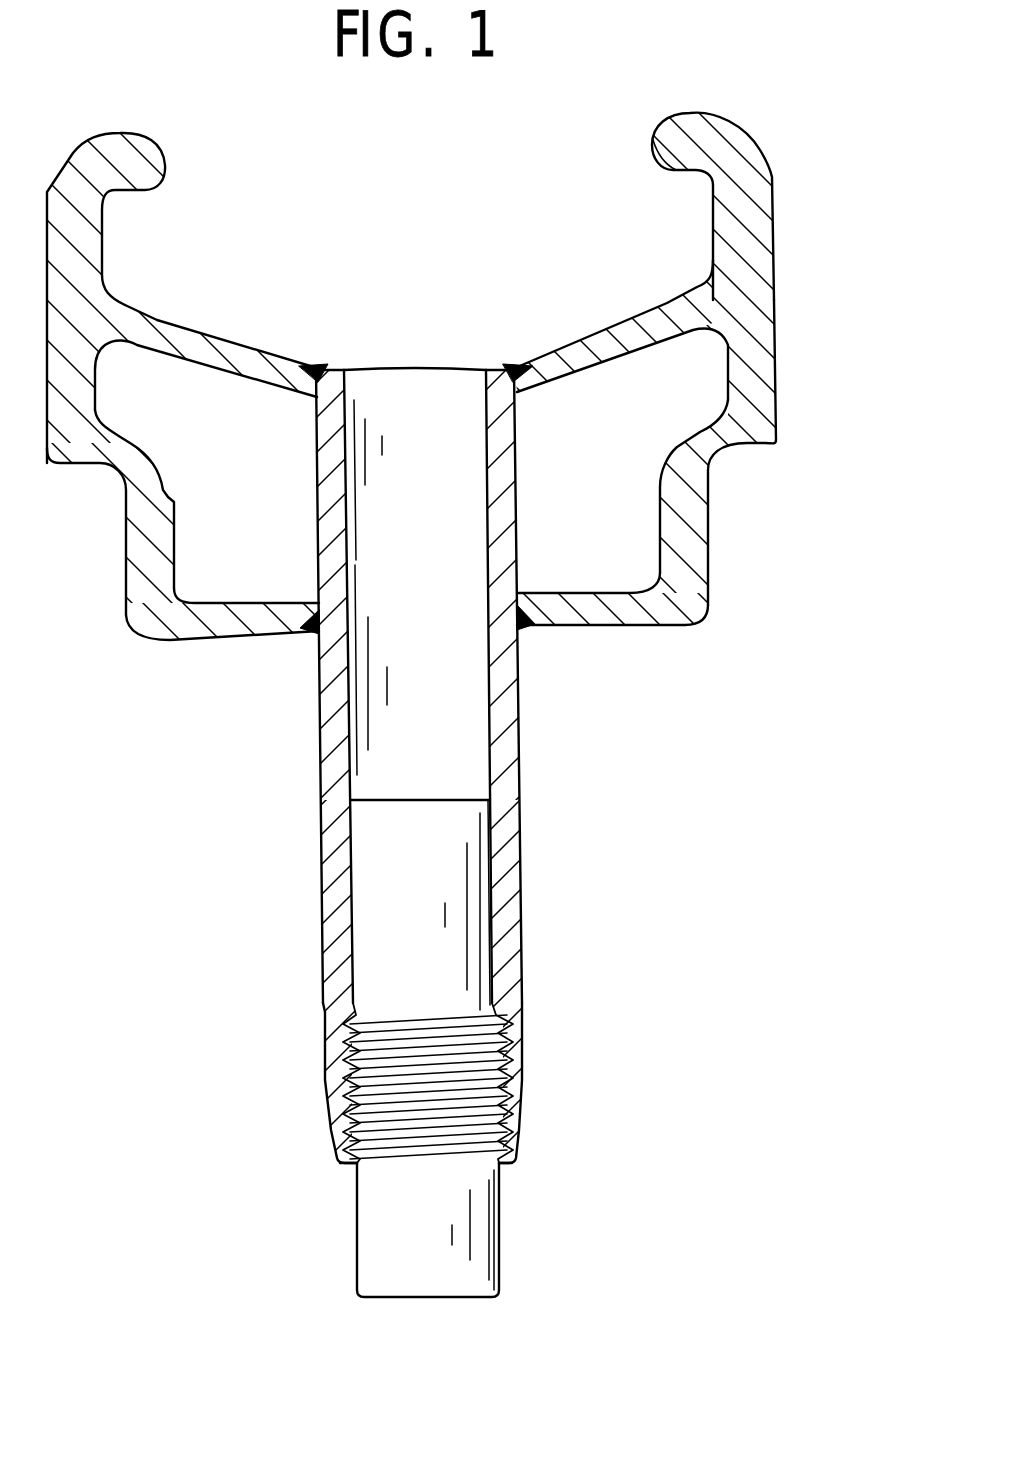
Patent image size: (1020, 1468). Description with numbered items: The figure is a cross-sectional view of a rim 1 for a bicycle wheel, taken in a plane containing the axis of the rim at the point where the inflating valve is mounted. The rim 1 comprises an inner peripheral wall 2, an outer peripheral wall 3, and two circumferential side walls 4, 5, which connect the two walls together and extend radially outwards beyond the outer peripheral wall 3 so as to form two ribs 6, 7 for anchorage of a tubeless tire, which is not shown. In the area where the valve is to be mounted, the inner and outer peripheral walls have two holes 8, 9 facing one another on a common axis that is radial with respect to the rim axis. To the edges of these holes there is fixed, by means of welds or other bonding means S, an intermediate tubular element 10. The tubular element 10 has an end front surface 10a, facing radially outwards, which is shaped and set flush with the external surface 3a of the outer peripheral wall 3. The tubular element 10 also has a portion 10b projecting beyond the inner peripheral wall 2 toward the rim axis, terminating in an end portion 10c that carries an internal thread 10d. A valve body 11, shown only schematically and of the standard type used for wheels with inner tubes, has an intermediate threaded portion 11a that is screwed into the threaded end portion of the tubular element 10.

The rim 1 is at (800, 392).
The inner peripheral wall 2 is at (633, 607).
The outer peripheral wall 3 is at (603, 343).
The external surface 3a is at (203, 337).
The circumferential side wall 4 is at (148, 552).
The circumferential side wall 5 is at (683, 536).
The rib 6 is at (67, 222).
The rib 7 is at (733, 192).
The hole 8 is at (317, 653).
The hole 9 is at (338, 366).
The intermediate tubular element 10 is at (433, 756).
The end front surface 10a is at (421, 364).
The portion 10b is at (508, 917).
The end portion 10c is at (527, 1087).
The internal thread 10d is at (375, 1140).
The valve body 11 is at (503, 1239).
The intermediate threaded portion 11a is at (400, 1088).
The welds S is at (513, 365).